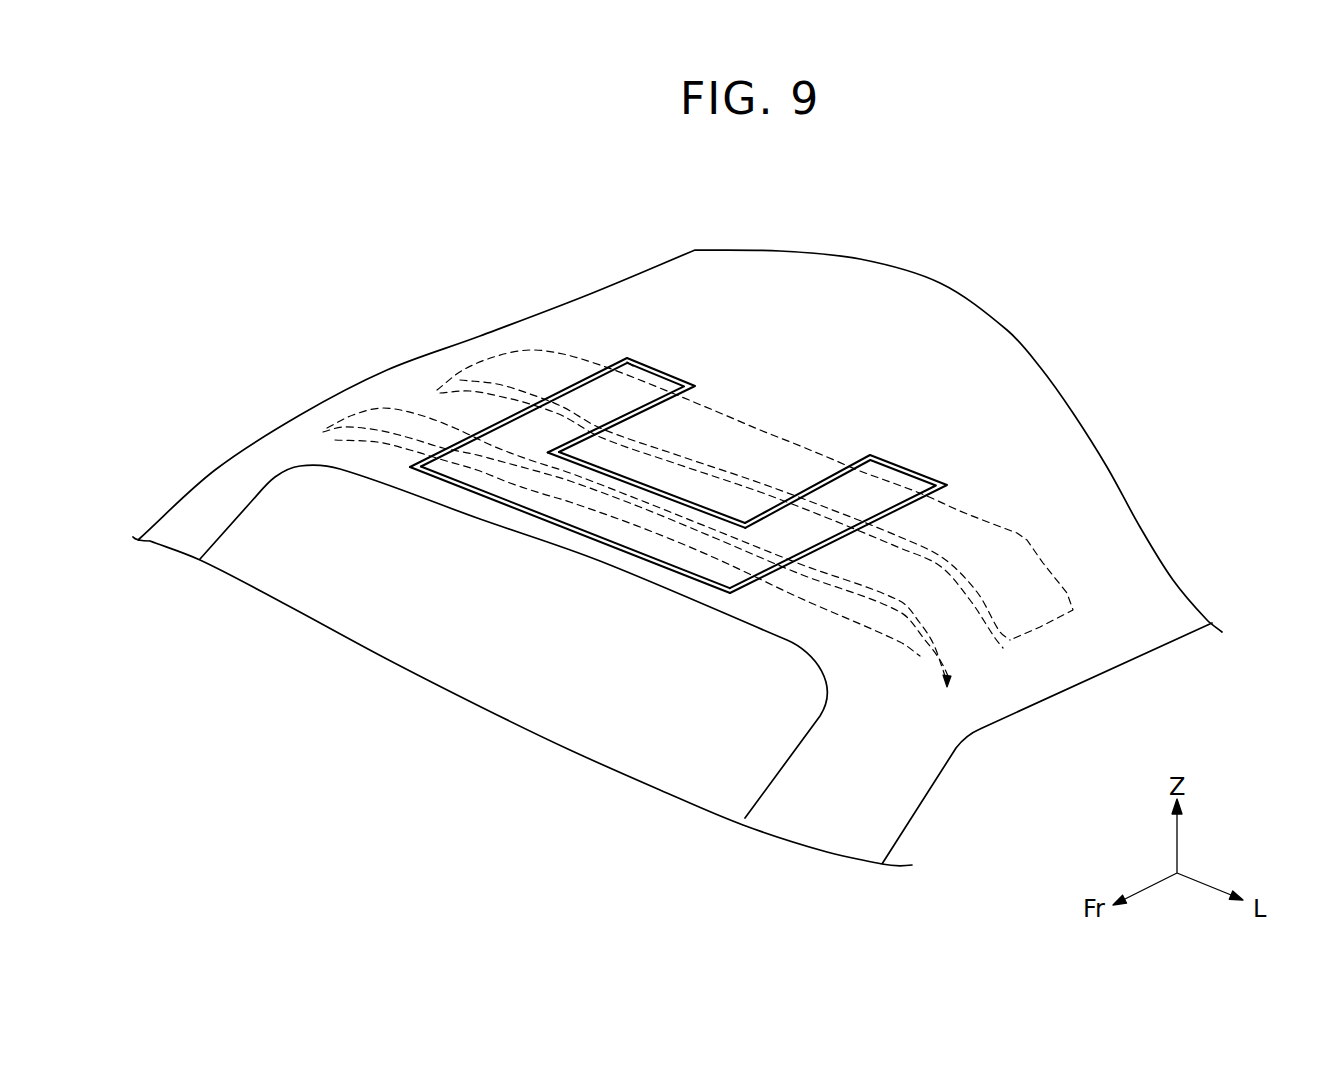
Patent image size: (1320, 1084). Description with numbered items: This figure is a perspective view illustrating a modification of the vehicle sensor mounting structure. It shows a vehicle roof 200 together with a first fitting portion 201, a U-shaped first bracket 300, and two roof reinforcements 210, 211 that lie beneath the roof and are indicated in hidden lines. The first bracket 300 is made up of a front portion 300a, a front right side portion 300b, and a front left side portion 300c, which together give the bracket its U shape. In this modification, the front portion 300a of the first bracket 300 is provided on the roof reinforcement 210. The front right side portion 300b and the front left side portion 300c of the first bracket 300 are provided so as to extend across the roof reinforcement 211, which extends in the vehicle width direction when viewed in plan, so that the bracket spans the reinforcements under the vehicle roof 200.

The vehicle roof 200 is at (652, 280).
The first fitting portion 201 is at (628, 356).
The roof reinforcement 210 is at (820, 600).
The roof reinforcement 211 is at (1027, 541).
The first bracket 300 is at (678, 420).
The front portion 300a is at (580, 500).
The front right side portion 300b is at (606, 400).
The front left side portion 300c is at (860, 497).